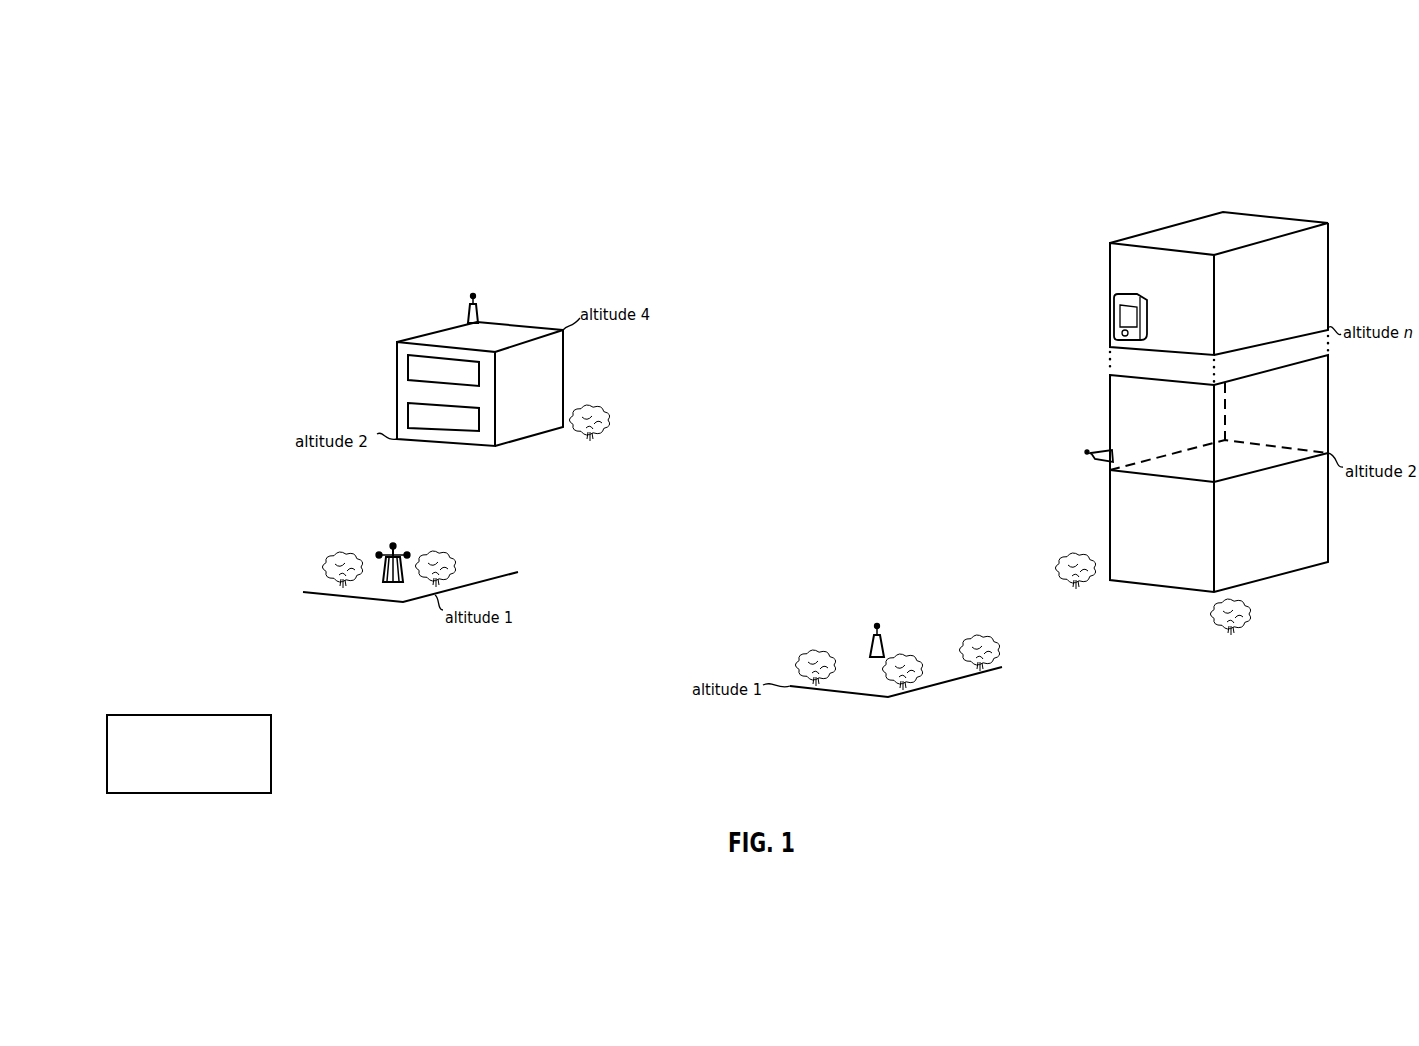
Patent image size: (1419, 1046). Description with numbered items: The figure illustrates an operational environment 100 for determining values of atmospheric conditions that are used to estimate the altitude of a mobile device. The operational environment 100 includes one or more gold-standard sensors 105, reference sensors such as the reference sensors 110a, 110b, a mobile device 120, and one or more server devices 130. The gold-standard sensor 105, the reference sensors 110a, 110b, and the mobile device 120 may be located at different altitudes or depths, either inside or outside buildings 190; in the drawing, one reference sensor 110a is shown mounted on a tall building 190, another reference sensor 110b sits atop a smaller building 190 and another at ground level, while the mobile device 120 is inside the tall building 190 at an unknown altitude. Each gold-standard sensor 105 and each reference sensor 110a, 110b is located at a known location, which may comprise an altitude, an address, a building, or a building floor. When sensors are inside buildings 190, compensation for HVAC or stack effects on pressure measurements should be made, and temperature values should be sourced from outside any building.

The operational environment 100 is at (143, 98).
The gold-standard sensor 105 is at (375, 555).
The reference sensor 110a is at (1085, 452).
The reference sensor 110b is at (467, 321).
The mobile device 120 is at (1113, 315).
The server device 130 is at (203, 775).
The building 190 is at (495, 447).